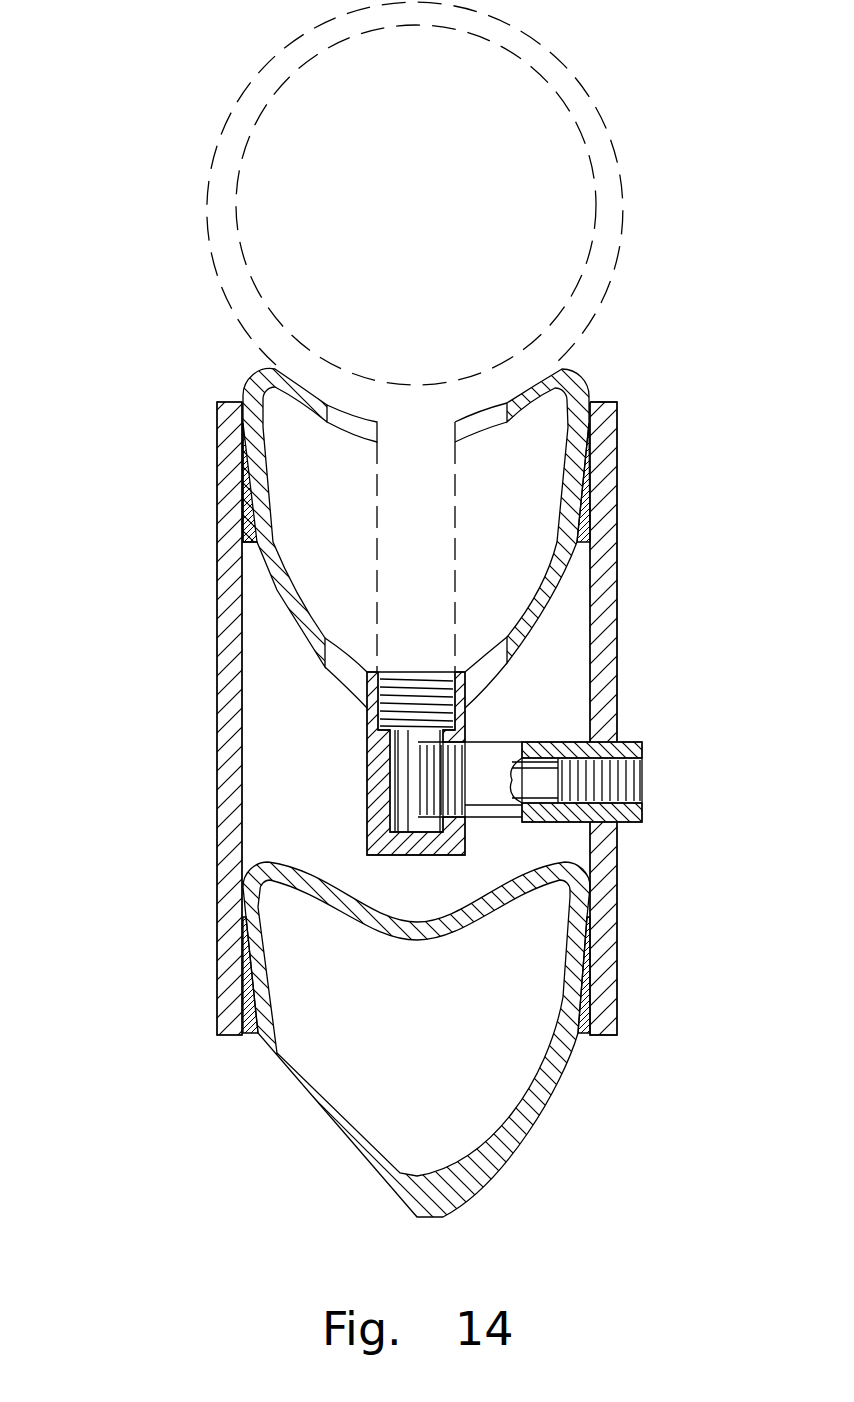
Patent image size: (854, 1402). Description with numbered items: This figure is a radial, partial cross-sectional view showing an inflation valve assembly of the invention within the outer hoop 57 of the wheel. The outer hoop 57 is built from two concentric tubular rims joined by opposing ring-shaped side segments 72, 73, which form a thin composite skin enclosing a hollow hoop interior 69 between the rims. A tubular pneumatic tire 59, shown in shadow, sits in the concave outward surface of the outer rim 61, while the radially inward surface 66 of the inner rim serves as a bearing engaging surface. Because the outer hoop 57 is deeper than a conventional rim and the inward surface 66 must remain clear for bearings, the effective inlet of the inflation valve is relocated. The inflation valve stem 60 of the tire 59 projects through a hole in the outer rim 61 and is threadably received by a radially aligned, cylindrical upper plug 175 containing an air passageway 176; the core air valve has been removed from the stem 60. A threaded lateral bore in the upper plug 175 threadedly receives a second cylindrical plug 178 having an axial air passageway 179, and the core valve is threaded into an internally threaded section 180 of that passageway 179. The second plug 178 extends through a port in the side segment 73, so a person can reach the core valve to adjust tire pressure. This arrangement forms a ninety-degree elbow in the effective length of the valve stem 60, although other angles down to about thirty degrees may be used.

The outer hoop 57 is at (173, 951).
The pneumatic tire 59 is at (612, 207).
The inflation valve stem 60 is at (440, 545).
The outer rim 61 is at (538, 627).
The radially inward surface 66 is at (413, 1217).
The hollow hoop interior 69 is at (282, 653).
The side segment 72 is at (230, 778).
The side segment 73 is at (605, 577).
The upper plug 175 is at (377, 757).
The air passageway 176 is at (403, 807).
The second cylindrical plug 178 is at (563, 742).
The axial air passageway 179 is at (535, 785).
The internally threaded section 180 is at (615, 788).